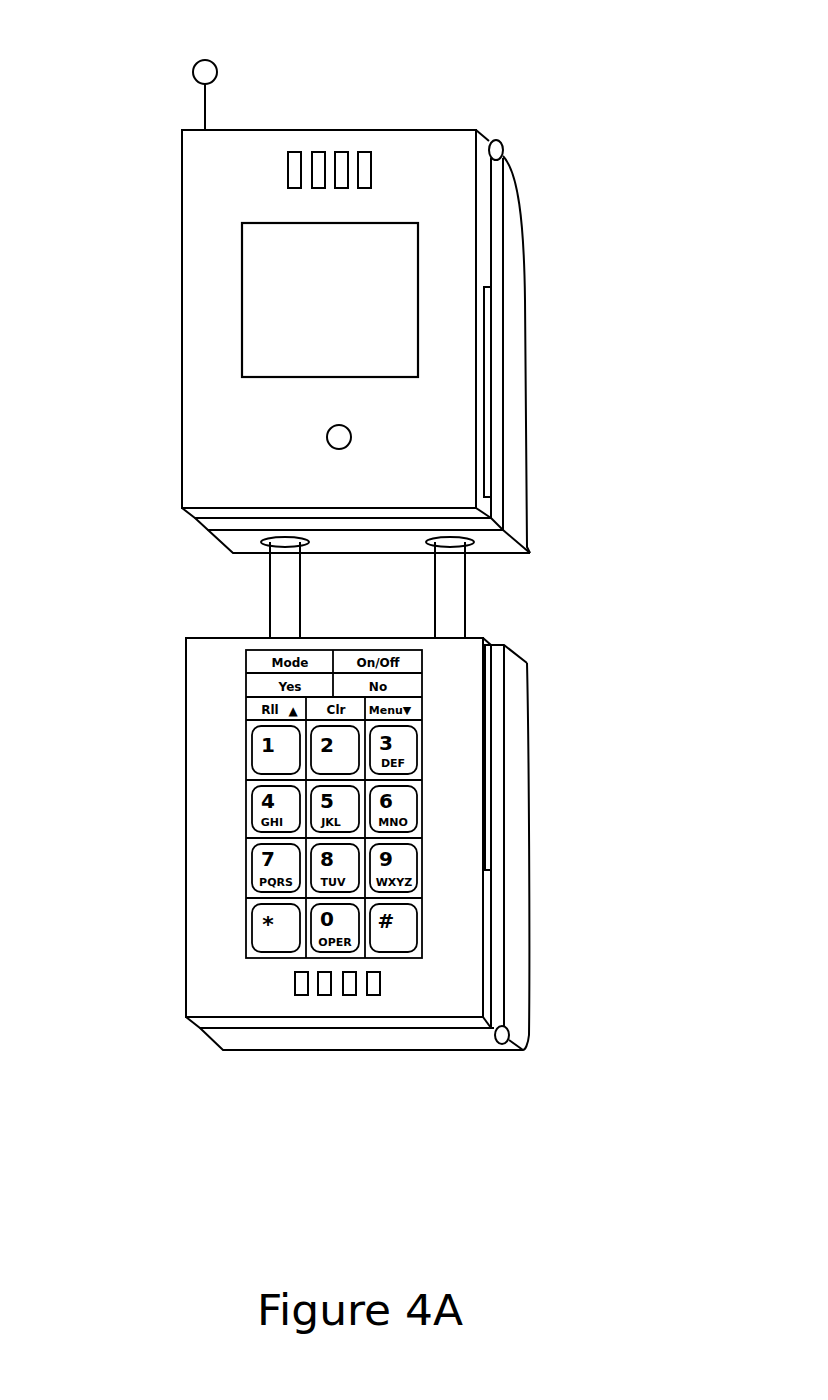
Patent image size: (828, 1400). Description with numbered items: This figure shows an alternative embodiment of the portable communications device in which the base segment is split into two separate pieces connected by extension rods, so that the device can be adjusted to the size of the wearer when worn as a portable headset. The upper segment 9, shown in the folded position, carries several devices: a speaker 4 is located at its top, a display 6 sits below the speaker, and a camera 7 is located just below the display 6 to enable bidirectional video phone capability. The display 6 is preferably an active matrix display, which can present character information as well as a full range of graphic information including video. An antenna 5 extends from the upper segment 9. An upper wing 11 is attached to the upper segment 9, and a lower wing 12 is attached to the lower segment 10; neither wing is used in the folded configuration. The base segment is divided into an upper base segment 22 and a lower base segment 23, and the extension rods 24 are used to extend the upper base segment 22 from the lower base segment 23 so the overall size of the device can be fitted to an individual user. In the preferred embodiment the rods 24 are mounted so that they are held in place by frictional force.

The speaker 4 is at (318, 152).
The antenna 5 is at (210, 95).
The display 6 is at (297, 332).
The camera 7 is at (333, 442).
The upper segment 9 is at (448, 175).
The lower segment 10 is at (467, 909).
The upper wing 11 is at (490, 495).
The lower wing 12 is at (525, 664).
The upper base segment 22 is at (523, 412).
The lower base segment 23 is at (526, 755).
The extension rods 24 is at (453, 590).